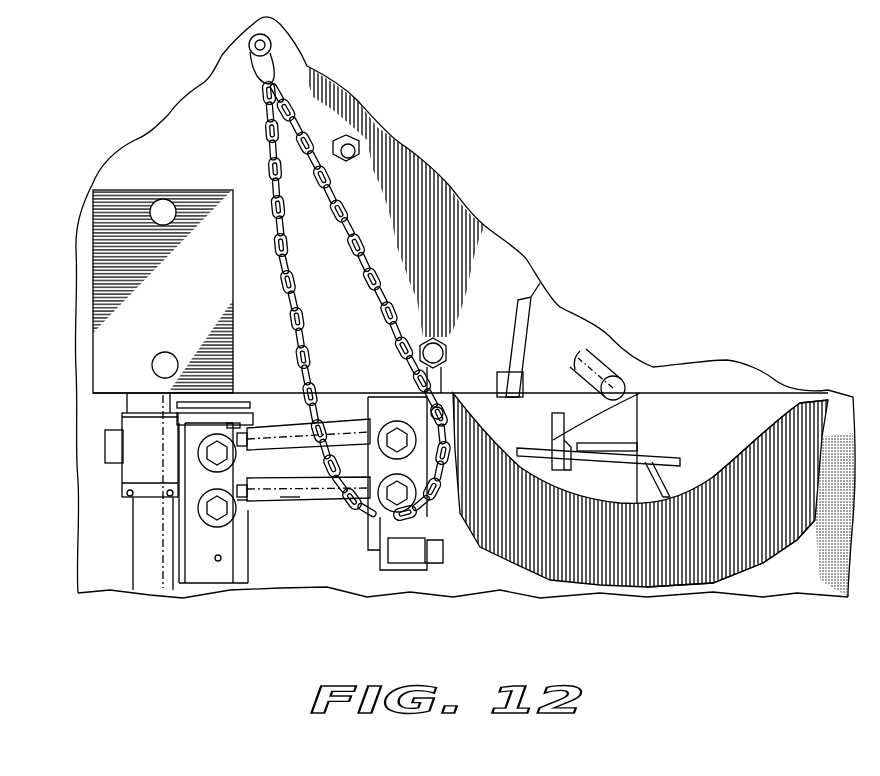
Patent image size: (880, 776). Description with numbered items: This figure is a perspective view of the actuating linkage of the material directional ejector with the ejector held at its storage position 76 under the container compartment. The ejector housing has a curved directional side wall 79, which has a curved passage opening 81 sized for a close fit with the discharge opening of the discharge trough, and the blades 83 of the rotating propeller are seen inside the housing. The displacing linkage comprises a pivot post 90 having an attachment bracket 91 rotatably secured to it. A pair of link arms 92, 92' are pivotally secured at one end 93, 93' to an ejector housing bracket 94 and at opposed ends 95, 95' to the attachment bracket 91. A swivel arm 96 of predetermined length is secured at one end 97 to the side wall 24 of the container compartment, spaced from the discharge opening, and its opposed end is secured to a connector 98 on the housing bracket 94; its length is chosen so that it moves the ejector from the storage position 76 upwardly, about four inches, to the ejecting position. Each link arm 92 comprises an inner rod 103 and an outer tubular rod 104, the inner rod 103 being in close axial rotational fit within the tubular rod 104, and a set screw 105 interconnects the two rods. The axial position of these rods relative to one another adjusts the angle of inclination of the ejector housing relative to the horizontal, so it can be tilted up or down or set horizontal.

The side wall 24 is at (200, 138).
The swivel arm end 97 is at (268, 42).
The swivel arm 96 is at (347, 203).
The connector 98 is at (453, 390).
The blades 83 is at (638, 395).
The curved passage opening 81 is at (773, 438).
The link arm 92 is at (275, 360).
The set screw 105 is at (268, 425).
The link arm end 93 is at (397, 459).
The link arm opposed end 95 is at (138, 457).
The pivot post 90 is at (150, 570).
The link arm opposed end 95' is at (178, 567).
The attachment bracket 91 is at (210, 577).
The inner rod 103 is at (240, 500).
The outer tubular rod 104 is at (290, 497).
The link arm 92' is at (303, 561).
The link arm end 93' is at (417, 560).
The ejector housing bracket 94 is at (425, 478).
The storage position 76 is at (612, 552).
The curved directional side wall 79 is at (713, 563).